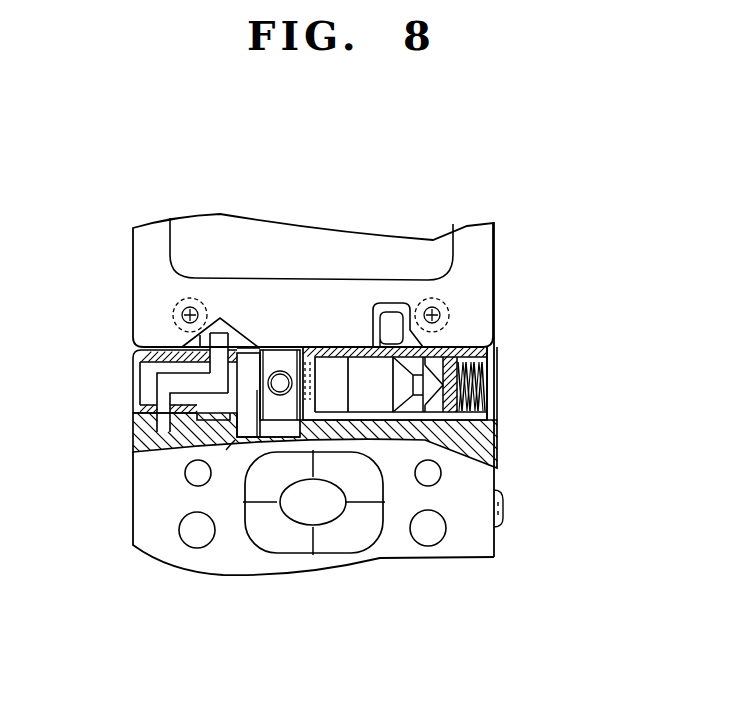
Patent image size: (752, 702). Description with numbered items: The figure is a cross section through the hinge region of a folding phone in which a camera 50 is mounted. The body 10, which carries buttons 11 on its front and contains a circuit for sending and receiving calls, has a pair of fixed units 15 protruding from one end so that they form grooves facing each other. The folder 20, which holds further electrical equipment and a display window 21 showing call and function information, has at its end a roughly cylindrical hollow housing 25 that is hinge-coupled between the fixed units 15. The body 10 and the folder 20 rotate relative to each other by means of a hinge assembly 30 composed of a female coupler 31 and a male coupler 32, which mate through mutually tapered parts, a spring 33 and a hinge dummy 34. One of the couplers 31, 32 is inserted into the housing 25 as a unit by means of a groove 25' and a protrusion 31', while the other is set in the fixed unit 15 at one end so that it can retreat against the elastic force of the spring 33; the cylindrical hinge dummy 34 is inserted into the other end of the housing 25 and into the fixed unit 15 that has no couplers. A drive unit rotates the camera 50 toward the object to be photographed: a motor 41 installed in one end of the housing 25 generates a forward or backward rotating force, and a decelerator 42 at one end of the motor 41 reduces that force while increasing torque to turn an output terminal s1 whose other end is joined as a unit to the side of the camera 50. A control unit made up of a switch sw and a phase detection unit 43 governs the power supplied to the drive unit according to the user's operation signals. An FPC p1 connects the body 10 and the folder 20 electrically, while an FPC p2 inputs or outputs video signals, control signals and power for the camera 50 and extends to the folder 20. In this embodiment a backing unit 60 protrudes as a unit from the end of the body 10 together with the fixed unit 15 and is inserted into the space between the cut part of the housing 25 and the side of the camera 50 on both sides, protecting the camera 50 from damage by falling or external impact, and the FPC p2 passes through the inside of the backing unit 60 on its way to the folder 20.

The body 10 is at (497, 546).
The buttons 11 is at (191, 547).
The fixed units 15 is at (493, 378).
The folder 20 is at (500, 292).
The display window 21 is at (446, 242).
The housing 25 is at (146, 451).
The groove 25' is at (386, 259).
The hinge assembly 30 is at (500, 344).
The female coupler 31 is at (342, 462).
The protrusion 31' is at (408, 272).
The male coupler 32 is at (483, 433).
The spring 33 is at (495, 423).
The hinge dummy 34 is at (133, 365).
The motor 41 is at (388, 440).
The decelerator 42 is at (337, 440).
The phase detection unit 43 is at (292, 347).
The camera 50 is at (263, 440).
The backing unit 60 is at (250, 347).
The FPC p1 is at (133, 388).
The FPC p2 is at (227, 440).
The output terminal s1 is at (331, 383).
The switch sw is at (504, 514).